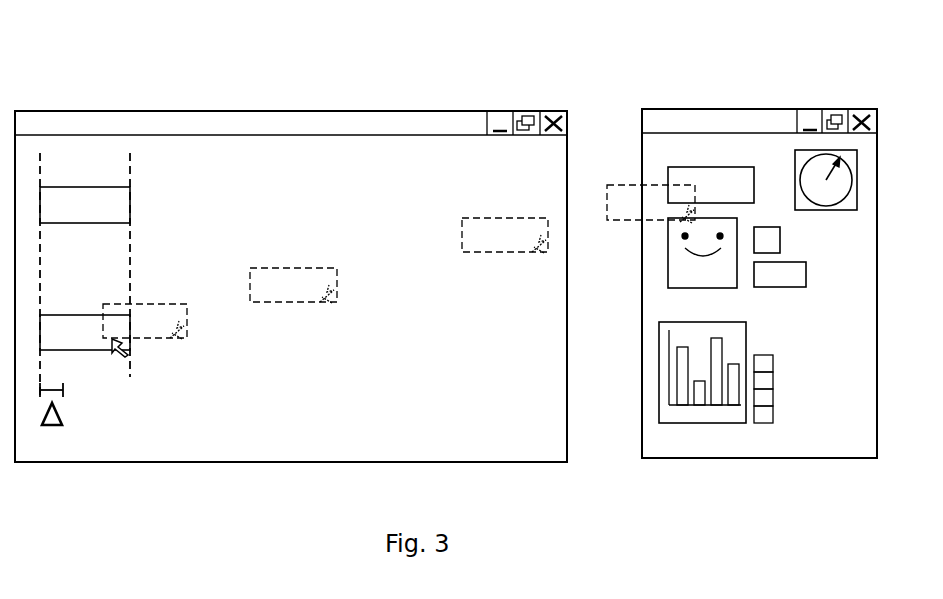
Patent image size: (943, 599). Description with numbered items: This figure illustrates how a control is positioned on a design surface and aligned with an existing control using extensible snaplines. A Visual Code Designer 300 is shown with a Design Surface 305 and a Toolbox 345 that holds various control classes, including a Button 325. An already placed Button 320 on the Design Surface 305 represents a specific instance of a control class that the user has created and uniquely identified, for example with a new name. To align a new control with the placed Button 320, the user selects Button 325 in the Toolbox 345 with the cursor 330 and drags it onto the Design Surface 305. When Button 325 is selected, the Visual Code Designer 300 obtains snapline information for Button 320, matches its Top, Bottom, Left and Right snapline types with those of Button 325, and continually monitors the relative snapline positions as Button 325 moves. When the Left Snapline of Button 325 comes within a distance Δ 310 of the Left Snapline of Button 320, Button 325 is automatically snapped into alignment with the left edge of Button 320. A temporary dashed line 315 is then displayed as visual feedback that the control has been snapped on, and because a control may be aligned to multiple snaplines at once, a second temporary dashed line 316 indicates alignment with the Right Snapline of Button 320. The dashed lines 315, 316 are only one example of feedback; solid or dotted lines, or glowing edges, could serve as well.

The Visual Code Designer 300 is at (124, 60).
The Design Surface 305 is at (322, 110).
The distance Δ 310 is at (67, 397).
The temporary dashed line 315 is at (41, 175).
The temporary dashed line 316 is at (131, 175).
The Button 320 is at (131, 203).
The Button 325 is at (66, 351).
The cursor 330 is at (130, 353).
The Toolbox 345 is at (757, 109).